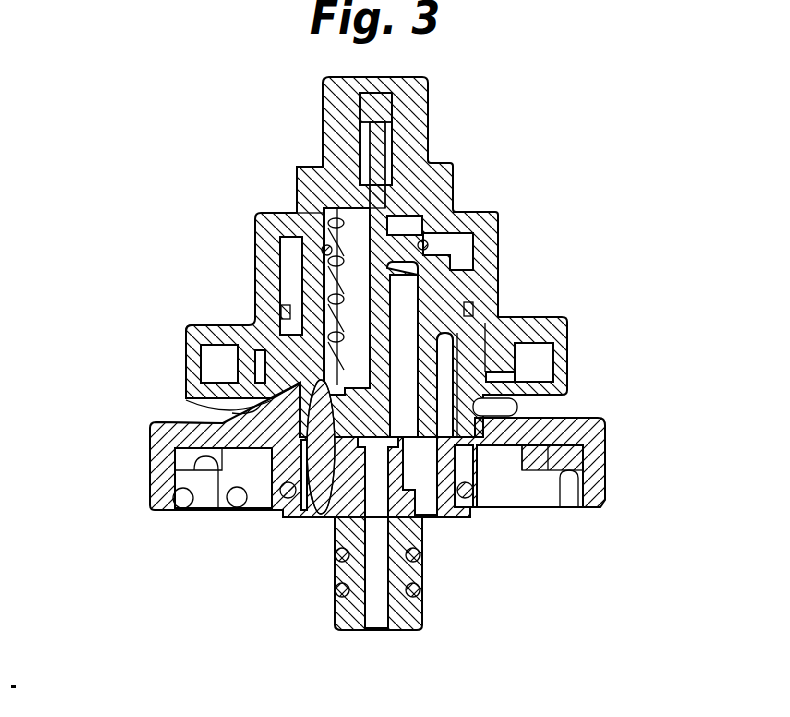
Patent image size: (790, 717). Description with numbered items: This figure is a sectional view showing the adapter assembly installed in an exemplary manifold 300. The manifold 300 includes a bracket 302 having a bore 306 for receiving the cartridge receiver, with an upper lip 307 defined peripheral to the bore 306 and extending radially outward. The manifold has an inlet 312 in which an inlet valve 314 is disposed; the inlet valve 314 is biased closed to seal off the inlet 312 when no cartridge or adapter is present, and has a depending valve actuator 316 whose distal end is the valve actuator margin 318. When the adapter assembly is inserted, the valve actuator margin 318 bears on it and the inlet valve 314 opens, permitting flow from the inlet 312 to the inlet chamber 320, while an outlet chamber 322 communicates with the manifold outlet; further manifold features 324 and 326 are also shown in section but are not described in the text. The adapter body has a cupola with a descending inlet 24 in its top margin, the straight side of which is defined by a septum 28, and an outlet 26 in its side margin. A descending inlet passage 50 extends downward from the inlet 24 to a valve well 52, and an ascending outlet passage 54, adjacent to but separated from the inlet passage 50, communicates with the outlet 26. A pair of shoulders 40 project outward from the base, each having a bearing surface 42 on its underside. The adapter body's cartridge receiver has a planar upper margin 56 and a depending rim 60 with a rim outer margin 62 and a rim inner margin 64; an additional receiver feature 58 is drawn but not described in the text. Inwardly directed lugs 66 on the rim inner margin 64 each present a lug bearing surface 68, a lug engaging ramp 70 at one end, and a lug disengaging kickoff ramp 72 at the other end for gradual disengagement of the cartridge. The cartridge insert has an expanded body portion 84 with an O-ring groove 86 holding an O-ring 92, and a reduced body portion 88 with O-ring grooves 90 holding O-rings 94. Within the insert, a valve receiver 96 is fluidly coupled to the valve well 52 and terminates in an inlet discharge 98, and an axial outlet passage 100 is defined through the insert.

The manifold 300 is at (322, 70).
The inlet valve 314 is at (350, 108).
The inlet 312 is at (358, 150).
The valve actuator 316 is at (430, 150).
The inlet chamber 320 is at (300, 190).
The descending inlet 24 is at (330, 212).
The descending inlet passage 50 is at (262, 235).
The valve well 52 is at (256, 300).
The upper lip 307 is at (200, 328).
The bracket 302 is at (186, 350).
The bore 306 is at (215, 408).
The rim outer margin 62 is at (150, 460).
The depending rim 60 is at (160, 470).
The rim inner margin 64 is at (175, 512).
The lug 66 is at (195, 510).
The lug bearing surface 68 is at (208, 482).
The lug engaging ramp 70 is at (242, 495).
The valve receiver 96 is at (315, 445).
The inlet discharge 98 is at (330, 522).
The axial outlet passage 100 is at (375, 612).
The O-ring groove 90 is at (395, 575).
The O-ring 94 is at (440, 595).
The reduced body portion 88 is at (430, 560).
The O-ring groove 86 is at (430, 505).
The O-ring 92 is at (490, 475).
The expanded body portion 84 is at (500, 445).
The lug disengaging kickoff ramp 72 is at (540, 512).
The groove 58 is at (580, 447).
The upper margin 56 is at (600, 425).
The bearing surface 42 is at (562, 372).
The shoulder 40 is at (556, 353).
The ascending outlet passage 54 is at (545, 322).
The pin 326 is at (498, 312).
The outlet 26 is at (480, 292).
The outlet chamber 322 is at (462, 250).
The shoulder 324 is at (498, 225).
The septum 28 is at (450, 197).
The valve actuator margin 318 is at (455, 168).